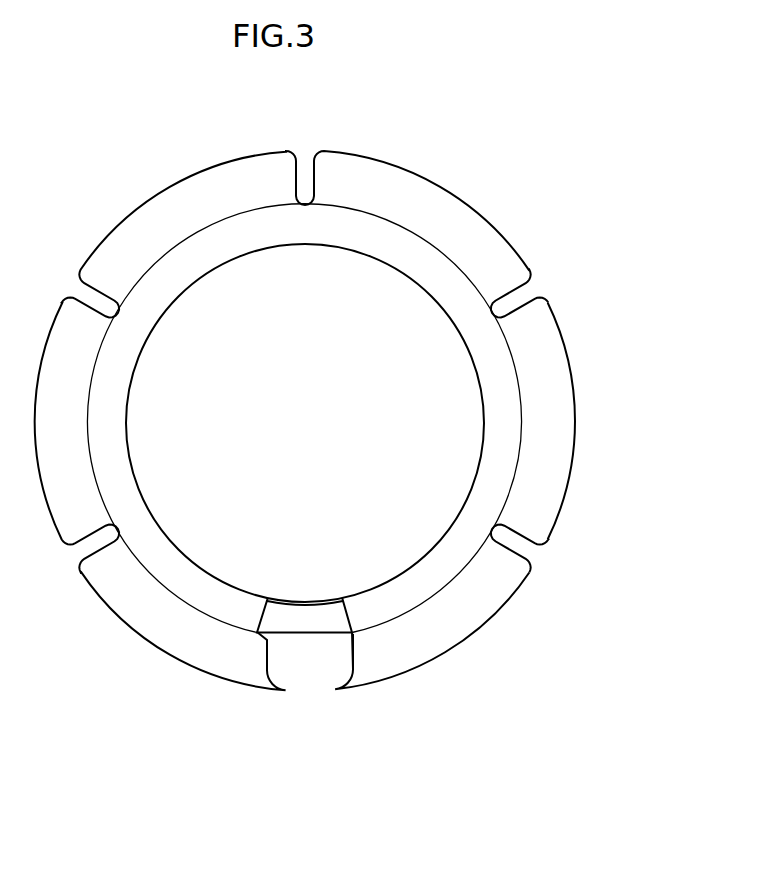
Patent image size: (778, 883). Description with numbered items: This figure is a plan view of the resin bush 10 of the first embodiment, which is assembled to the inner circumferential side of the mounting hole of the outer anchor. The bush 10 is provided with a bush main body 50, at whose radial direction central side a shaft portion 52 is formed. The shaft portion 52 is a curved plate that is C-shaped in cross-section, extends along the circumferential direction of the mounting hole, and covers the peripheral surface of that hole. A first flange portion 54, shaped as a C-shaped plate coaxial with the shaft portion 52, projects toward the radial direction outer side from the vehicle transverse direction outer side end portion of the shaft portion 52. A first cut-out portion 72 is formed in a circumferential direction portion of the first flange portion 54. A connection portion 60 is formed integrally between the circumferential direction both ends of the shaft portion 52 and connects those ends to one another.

The bush 10 is at (349, 449).
The bush main body 50 is at (577, 438).
The shaft portion 52 is at (448, 563).
The first flange portion 54 is at (563, 427).
The connection portion 60 is at (300, 623).
The first cut-out portion 72 is at (351, 678).